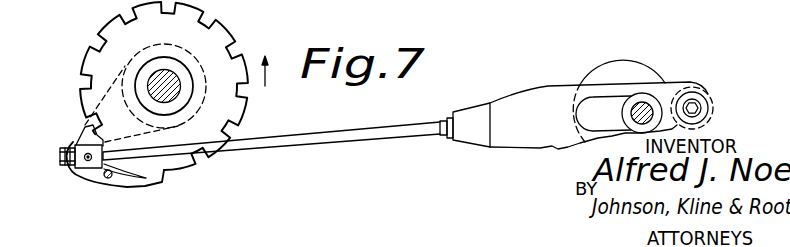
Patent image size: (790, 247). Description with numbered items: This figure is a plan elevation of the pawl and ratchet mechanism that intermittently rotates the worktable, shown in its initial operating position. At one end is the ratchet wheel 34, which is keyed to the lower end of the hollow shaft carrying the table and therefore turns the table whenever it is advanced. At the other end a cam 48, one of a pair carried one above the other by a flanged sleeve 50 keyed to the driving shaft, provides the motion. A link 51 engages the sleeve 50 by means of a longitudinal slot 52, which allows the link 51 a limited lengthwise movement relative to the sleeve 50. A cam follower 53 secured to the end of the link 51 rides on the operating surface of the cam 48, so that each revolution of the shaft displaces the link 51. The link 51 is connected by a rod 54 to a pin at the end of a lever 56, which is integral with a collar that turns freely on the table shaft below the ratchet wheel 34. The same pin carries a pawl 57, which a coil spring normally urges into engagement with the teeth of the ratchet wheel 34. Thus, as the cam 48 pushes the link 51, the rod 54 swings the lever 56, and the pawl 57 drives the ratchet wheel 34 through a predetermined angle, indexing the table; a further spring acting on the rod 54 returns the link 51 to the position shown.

The ratchet wheel 34 is at (218, 36).
The cam 48 is at (635, 70).
The flanged sleeve 50 is at (655, 103).
The link 51 is at (553, 98).
The longitudinal slot 52 is at (600, 110).
The cam follower 53 is at (709, 97).
The rod 54 is at (318, 137).
The lever 56 is at (87, 128).
The pawl 57 is at (131, 183).